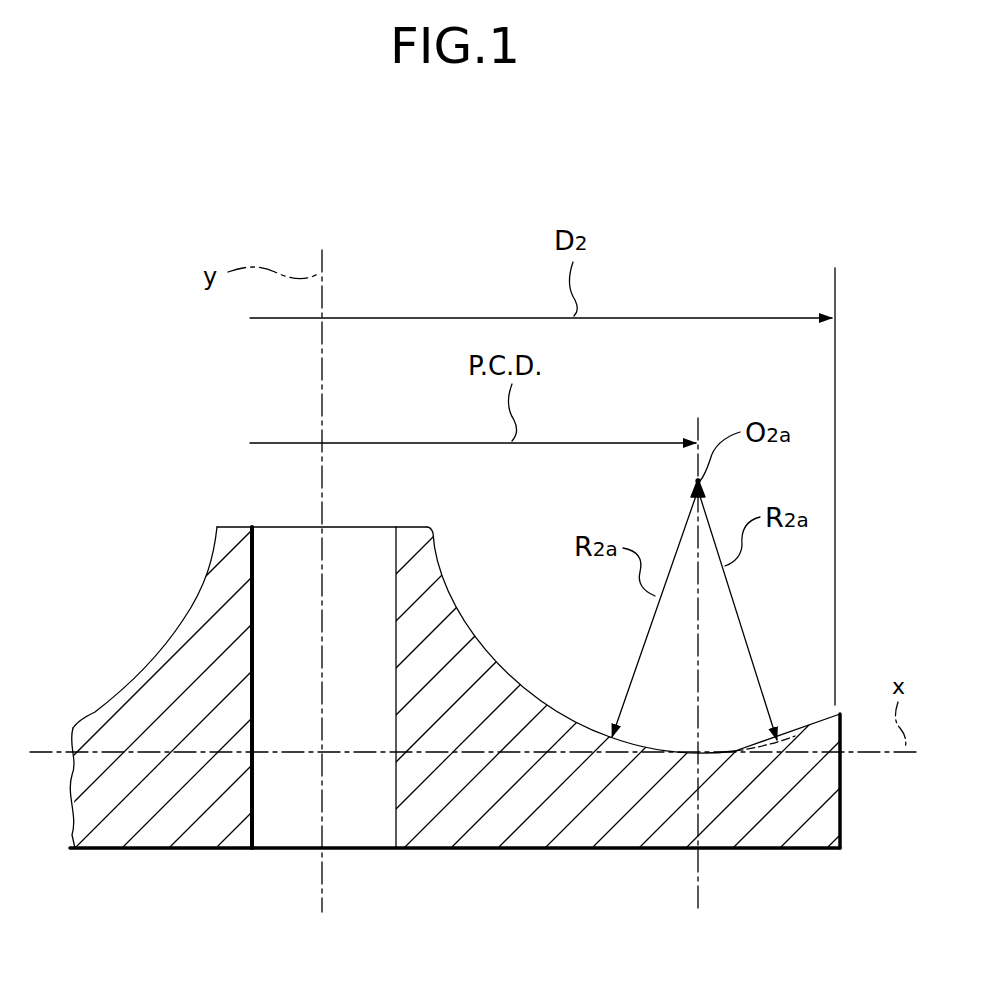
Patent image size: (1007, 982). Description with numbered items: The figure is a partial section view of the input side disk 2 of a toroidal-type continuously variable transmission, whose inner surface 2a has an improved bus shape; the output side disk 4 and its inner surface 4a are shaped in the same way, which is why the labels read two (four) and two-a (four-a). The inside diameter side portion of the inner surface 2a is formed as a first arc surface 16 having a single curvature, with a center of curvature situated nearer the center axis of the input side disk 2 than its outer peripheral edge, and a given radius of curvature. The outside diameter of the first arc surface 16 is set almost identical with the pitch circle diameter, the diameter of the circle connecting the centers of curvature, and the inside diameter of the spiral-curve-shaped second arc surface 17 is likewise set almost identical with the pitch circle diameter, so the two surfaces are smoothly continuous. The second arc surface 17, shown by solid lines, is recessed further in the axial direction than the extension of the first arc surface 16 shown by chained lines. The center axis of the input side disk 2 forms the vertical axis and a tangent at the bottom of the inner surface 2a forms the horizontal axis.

The input side disk 2 is at (503, 736).
The output side disk 4 is at (762, 835).
The inner surface of the input side disk 2a is at (661, 807).
The inner surface of the output side disk 4a is at (702, 744).
The first arc surface 16 is at (503, 725).
The second arc surface 17 is at (800, 750).